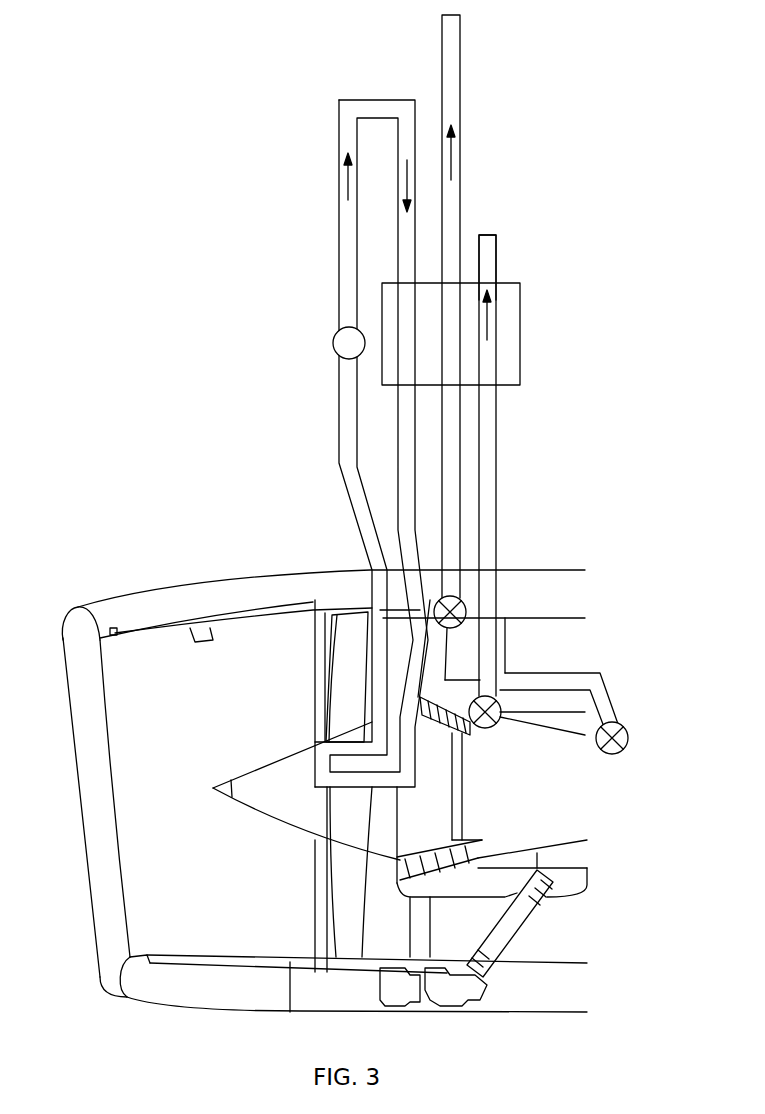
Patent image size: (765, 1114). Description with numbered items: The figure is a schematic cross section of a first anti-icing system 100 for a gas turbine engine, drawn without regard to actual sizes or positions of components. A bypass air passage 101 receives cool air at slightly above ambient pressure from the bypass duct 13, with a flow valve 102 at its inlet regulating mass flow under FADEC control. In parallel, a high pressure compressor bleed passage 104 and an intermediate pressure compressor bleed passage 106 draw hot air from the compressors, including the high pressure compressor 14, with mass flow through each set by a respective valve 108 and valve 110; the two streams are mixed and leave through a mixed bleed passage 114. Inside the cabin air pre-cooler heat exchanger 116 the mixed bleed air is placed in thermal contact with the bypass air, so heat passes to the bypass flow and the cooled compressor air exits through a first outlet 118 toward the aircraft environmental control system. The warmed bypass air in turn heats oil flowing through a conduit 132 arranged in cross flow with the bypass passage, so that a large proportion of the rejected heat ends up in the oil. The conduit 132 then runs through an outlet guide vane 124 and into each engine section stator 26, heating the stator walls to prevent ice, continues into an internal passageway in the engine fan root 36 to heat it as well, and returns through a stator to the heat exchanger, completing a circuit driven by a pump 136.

The first anti-icing system 100 is at (172, 401).
The bypass duct 13 is at (580, 653).
The high pressure compressor 14 is at (488, 780).
The engine section stator 26 is at (398, 700).
The engine fan root 36 is at (370, 730).
The bypass air passage 101 is at (460, 493).
The flow valve 102 is at (457, 600).
The high pressure compressor bleed passage 104 is at (607, 693).
The intermediate pressure compressor bleed passage 106 is at (505, 718).
The valve 108 is at (628, 733).
The valve 110 is at (500, 668).
The mixed bleed passage 114 is at (496, 438).
The cabin air pre-cooler heat exchanger 116 is at (520, 320).
The first outlet 118 is at (497, 268).
The outlet guide vane 124 is at (465, 722).
The conduit 132 is at (405, 268).
The pump 136 is at (334, 340).